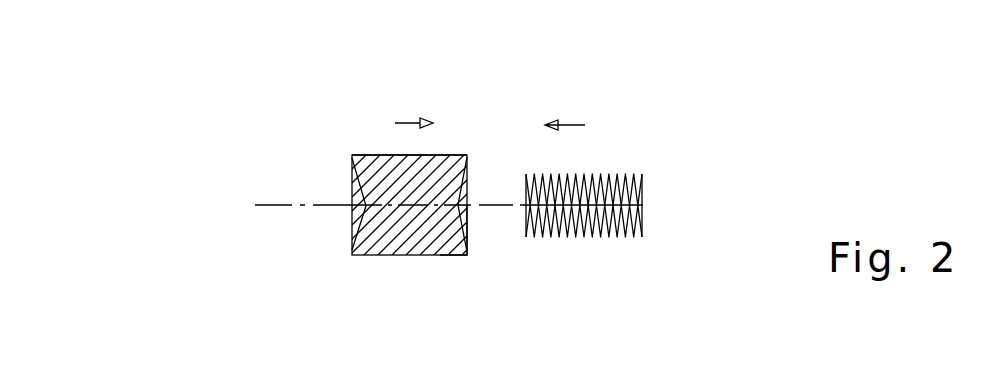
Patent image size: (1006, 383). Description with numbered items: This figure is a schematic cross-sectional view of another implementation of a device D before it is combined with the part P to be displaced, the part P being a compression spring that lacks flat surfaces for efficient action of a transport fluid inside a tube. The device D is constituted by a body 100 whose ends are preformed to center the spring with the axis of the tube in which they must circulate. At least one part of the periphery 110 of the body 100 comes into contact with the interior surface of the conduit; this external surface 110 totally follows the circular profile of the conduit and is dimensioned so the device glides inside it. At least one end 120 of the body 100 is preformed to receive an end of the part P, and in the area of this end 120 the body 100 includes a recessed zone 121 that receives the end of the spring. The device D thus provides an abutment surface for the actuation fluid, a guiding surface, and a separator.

The body 100 is at (408, 239).
The periphery 110 is at (445, 155).
The recessed zone 121 is at (463, 195).
The end 120 is at (467, 254).
The device D is at (356, 136).
The part P is at (607, 178).